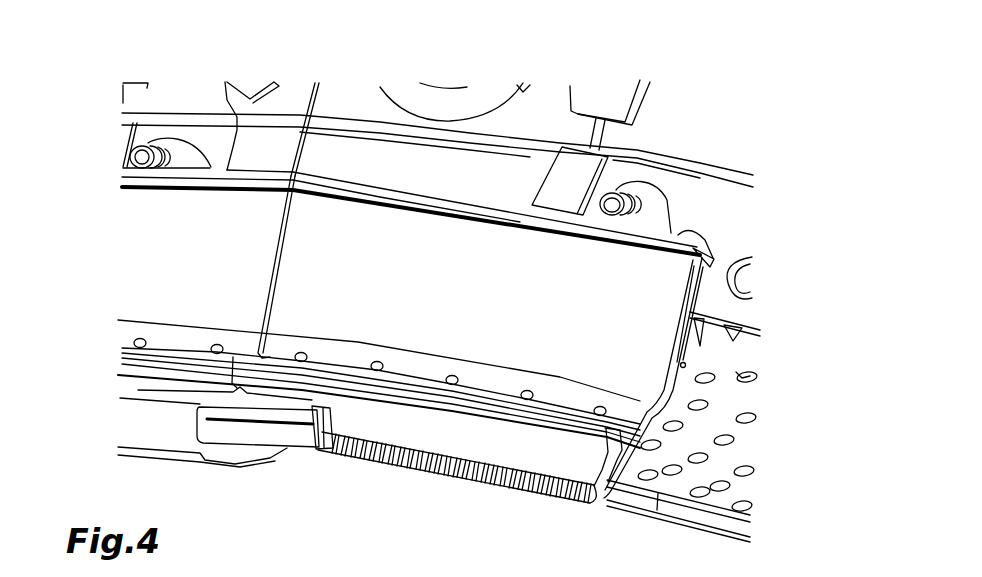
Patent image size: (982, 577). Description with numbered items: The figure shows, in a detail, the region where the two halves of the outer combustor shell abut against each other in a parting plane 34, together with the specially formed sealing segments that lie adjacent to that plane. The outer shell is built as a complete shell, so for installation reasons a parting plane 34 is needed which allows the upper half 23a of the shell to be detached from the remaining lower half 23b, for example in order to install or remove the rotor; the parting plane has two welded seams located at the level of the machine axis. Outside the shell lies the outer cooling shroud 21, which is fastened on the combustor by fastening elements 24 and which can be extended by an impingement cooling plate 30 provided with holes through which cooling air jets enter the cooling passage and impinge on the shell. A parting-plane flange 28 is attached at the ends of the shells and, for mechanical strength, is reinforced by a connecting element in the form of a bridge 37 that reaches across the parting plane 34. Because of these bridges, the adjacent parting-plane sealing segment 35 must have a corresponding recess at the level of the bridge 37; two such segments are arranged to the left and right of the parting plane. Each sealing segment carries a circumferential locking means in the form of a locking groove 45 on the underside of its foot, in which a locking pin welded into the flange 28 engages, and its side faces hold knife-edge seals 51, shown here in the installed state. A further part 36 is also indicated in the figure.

The outer cooling shroud 21 is at (728, 215).
The upper half of the outer shell 23a is at (205, 77).
The lower half of the outer shell 23b is at (567, 73).
The fastening element 24 is at (140, 150).
The parting-plane flange 28 is at (150, 435).
The impingement cooling plate 30 is at (727, 402).
The parting plane 34 is at (322, 77).
The parting-plane sealing segment 35 is at (518, 316).
The connector 36 is at (306, 406).
The bridge 37 is at (260, 413).
The locking groove 45 is at (410, 460).
The knife-edge seal 51 is at (672, 351).